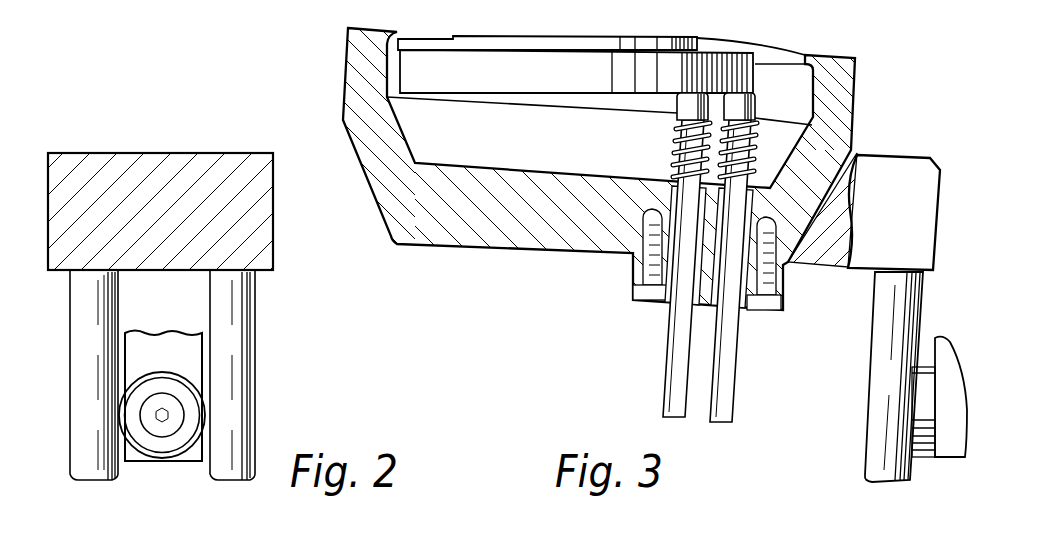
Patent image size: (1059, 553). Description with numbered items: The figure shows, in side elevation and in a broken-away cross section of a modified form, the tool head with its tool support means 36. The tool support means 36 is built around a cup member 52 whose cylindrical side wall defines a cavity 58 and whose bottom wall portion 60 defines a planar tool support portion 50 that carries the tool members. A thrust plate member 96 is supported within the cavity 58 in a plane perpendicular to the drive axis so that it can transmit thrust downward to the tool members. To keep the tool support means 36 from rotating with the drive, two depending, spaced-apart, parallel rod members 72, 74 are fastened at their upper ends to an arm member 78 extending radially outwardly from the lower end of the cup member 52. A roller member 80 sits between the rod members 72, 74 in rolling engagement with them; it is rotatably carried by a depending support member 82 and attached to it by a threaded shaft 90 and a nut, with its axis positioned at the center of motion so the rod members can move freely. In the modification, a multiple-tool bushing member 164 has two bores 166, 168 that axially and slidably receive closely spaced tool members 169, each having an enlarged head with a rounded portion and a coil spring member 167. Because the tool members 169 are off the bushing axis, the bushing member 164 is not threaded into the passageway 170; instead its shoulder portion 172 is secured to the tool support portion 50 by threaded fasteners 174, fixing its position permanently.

In FIG. 3, the tool support means 36 is at (345, 46).
In FIG. 3, the cup member 52 is at (355, 58).
In FIG. 3, the cavity 58 is at (410, 45).
In FIG. 3, the thrust plate member 96 is at (541, 80).
In FIG. 3, the bottom wall portion 60 is at (460, 183).
In FIG. 3, the tool support portion 50 is at (458, 237).
In FIG. 3, the bore 168 is at (747, 80).
In FIG. 3, the bore 166 is at (757, 112).
In FIG. 3, the coil spring member 167 is at (758, 152).
In FIG. 3, the passageway 170 is at (672, 186).
In FIG. 3, the shoulder portion 172 is at (634, 262).
In FIG. 3, the bushing member 164 is at (632, 278).
In FIG. 3, the threaded fasteners 174 is at (633, 302).
In FIG. 3, the tool member 169 is at (670, 378).
In FIG. 2, the arm member 78 is at (148, 178).
In FIG. 3, the arm member 78 is at (897, 182).
In FIG. 2, the rod member 72 is at (238, 330).
In FIG. 3, the rod member 72 is at (897, 289).
In FIG. 2, the support member 82 is at (158, 343).
In FIG. 3, the support member 82 is at (944, 365).
In FIG. 2, the roller member 80 is at (163, 446).
In FIG. 3, the roller member 80 is at (918, 442).
In FIG. 2, the rod member 74 is at (100, 297).
In FIG. 2, the threaded shaft 90 is at (177, 414).